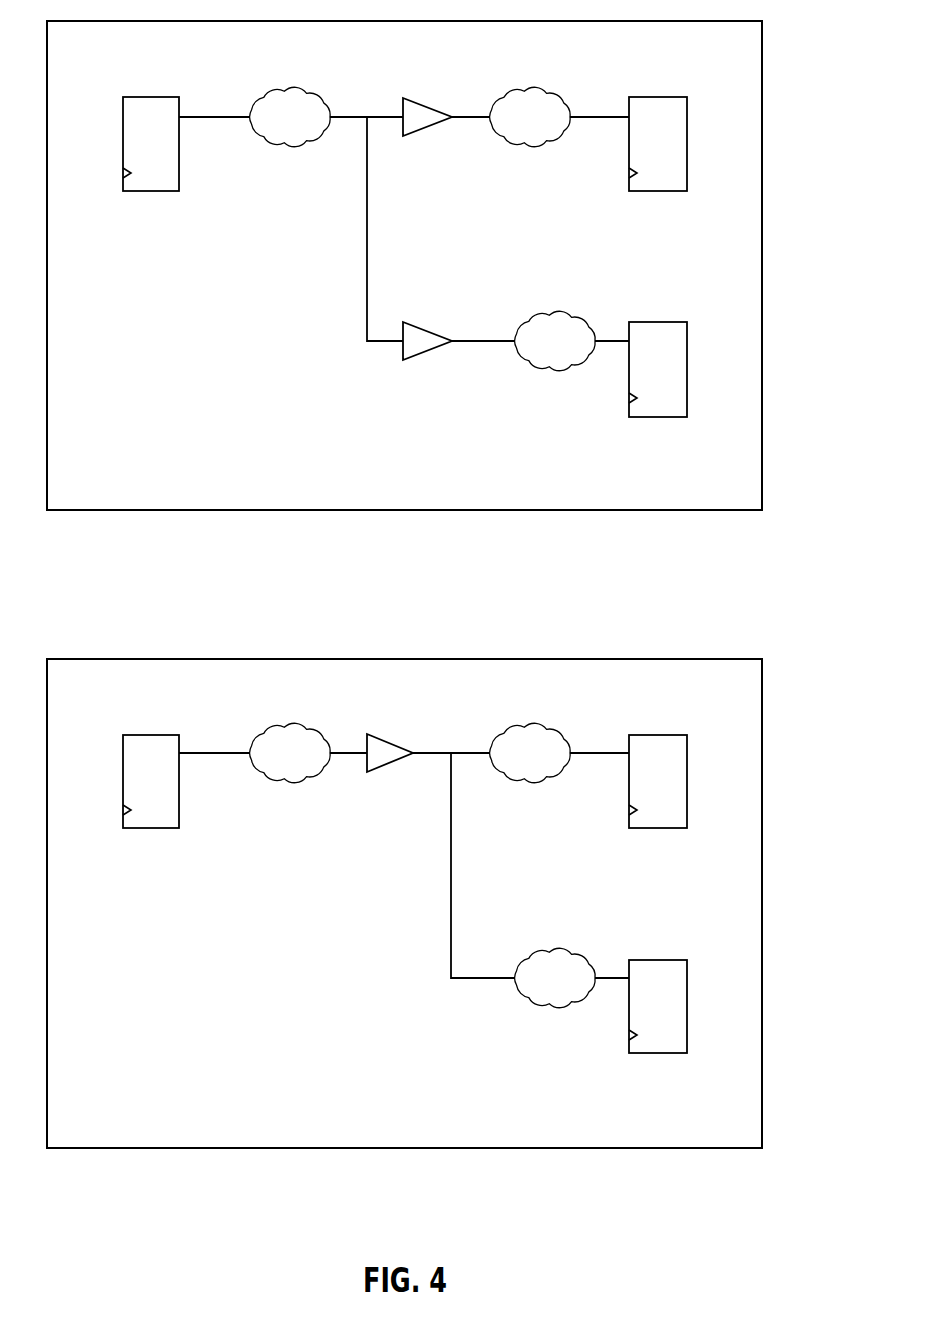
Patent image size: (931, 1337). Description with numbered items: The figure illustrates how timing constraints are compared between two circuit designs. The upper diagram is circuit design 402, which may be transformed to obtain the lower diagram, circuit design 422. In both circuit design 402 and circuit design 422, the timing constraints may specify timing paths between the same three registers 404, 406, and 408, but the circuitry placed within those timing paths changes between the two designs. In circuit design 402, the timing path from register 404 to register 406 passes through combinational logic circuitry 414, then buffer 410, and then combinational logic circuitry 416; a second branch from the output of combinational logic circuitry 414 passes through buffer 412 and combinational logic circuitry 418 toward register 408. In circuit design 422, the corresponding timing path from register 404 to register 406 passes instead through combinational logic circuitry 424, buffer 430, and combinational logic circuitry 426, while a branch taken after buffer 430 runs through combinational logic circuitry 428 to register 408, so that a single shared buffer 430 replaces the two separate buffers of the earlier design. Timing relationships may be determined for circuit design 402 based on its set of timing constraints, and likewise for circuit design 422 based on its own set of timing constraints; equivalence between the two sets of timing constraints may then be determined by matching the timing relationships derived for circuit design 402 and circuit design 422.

The circuit design 402 is at (762, 60).
The register 404 is at (140, 191).
The register 406 is at (657, 191).
The register 408 is at (657, 417).
The buffer 410 is at (403, 96).
The buffer 412 is at (403, 320).
The combinational logic circuitry 414 is at (276, 128).
The combinational logic circuitry 416 is at (515, 128).
The combinational logic circuitry 418 is at (540, 352).
The circuit design 422 is at (762, 697).
The combinational logic circuitry 424 is at (276, 764).
The combinational logic circuitry 426 is at (515, 764).
The combinational logic circuitry 428 is at (540, 989).
The buffer 430 is at (367, 732).